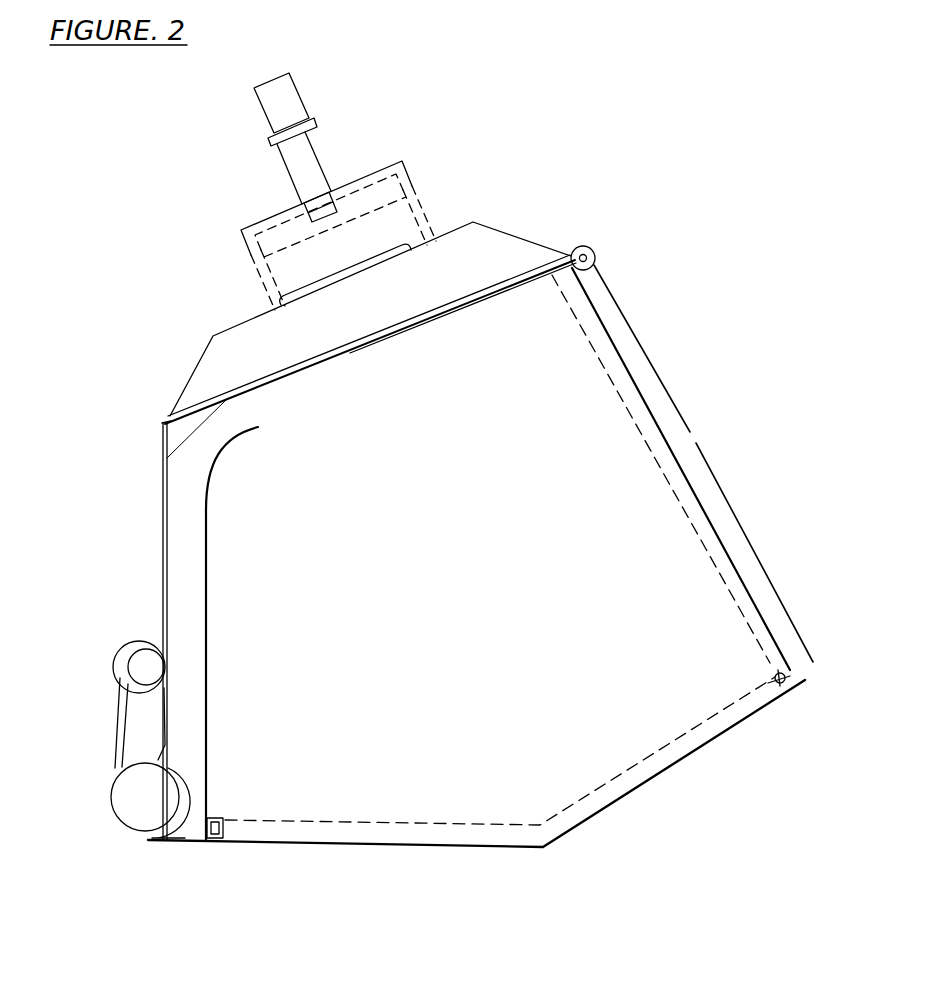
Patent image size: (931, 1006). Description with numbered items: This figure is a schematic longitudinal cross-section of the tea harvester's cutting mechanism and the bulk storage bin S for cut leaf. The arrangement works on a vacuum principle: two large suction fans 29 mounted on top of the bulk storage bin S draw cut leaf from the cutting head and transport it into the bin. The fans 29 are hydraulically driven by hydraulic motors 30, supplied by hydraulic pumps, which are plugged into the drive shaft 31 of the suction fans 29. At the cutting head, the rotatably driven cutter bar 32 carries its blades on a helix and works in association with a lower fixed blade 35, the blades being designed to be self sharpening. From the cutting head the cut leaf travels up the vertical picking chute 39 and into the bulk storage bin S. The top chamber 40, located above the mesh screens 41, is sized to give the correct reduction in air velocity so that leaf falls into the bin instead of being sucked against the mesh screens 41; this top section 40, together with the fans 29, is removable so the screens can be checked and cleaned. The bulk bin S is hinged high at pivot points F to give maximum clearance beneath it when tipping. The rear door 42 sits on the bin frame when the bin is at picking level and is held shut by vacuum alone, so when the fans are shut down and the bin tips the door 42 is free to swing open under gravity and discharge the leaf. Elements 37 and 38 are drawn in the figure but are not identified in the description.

The suction fans 29 is at (365, 230).
The hydraulic motors 30 is at (298, 102).
The drive shaft 31 is at (320, 157).
The cutter bar 32 is at (132, 827).
The lower fixed blade 35 is at (153, 845).
The idler pulley 37 is at (122, 648).
The belt 38 is at (167, 698).
The vertical picking chute 39 is at (170, 593).
The top chamber 40 is at (243, 357).
The mesh screens 41 is at (502, 273).
The rear door 42 is at (695, 438).
The bulk storage bin S is at (665, 542).
The pivot points F is at (790, 680).